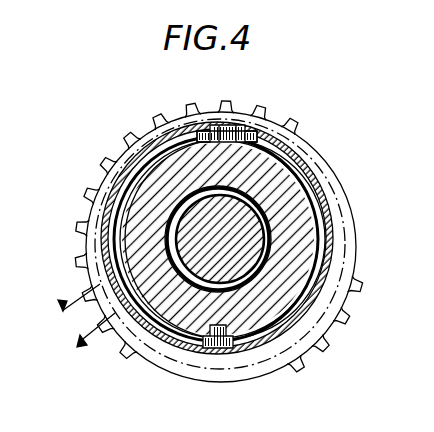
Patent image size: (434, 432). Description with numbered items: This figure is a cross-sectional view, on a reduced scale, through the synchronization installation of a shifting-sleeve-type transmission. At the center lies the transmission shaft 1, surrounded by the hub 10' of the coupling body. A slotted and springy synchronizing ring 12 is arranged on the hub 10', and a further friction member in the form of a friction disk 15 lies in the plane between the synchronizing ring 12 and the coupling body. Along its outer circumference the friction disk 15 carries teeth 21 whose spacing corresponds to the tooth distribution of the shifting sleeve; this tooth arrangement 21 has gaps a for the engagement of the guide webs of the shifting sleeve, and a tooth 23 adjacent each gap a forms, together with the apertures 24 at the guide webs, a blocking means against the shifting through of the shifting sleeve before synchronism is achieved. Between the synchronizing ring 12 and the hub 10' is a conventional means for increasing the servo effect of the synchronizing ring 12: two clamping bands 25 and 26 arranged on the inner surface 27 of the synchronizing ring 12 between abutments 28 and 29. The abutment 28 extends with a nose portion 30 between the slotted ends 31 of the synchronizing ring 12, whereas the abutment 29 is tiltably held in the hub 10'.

The transmission shaft 1 is at (262, 246).
The hub 10' is at (370, 283).
The synchronizing ring 12 is at (333, 231).
The friction disk 15 is at (171, 347).
The teeth 21 is at (285, 116).
The tooth 23 is at (90, 280).
The apertures 24 is at (130, 338).
The clamping band 25 is at (123, 193).
The clamping band 26 is at (304, 183).
The inner surface 27 is at (148, 163).
The abutment 28 is at (187, 127).
The abutment 29 is at (226, 346).
The nose portion 30 is at (222, 126).
The slotted ends 31 is at (254, 126).
The gap a is at (86, 315).